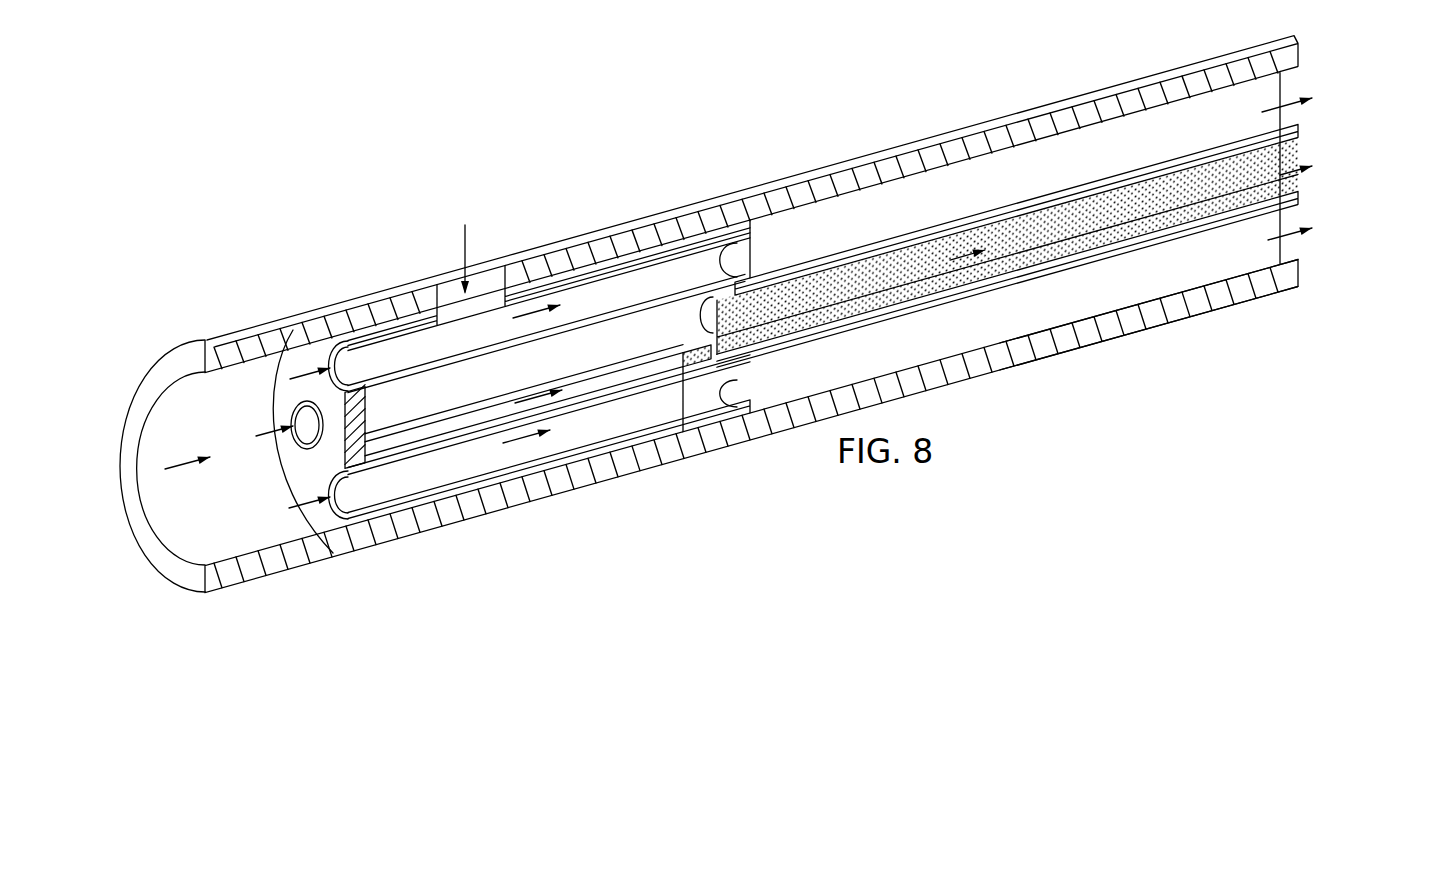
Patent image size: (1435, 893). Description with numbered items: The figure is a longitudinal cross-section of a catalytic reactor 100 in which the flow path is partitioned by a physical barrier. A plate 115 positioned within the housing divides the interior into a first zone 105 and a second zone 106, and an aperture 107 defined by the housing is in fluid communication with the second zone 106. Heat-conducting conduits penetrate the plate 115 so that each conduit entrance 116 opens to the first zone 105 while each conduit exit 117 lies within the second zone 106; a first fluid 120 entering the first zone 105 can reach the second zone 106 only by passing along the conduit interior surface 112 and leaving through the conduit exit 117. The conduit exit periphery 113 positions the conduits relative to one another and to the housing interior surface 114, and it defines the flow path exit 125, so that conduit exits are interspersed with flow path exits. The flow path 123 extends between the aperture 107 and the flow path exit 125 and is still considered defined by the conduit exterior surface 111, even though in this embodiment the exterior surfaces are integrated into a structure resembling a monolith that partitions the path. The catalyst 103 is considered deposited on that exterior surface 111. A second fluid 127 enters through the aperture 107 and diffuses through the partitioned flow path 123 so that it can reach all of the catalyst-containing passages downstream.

The catalytic reactor 100 is at (746, 166).
The catalyst 103 is at (848, 288).
The first zone 105 is at (188, 523).
The second zone 106 is at (628, 373).
The aperture 107 is at (500, 275).
The conduit exterior surface 111 is at (413, 407).
The conduit interior surface 112 is at (468, 463).
The conduit exit periphery 113 is at (1300, 190).
The housing interior surface 114 is at (280, 537).
The plate 115 is at (304, 372).
The conduit entrance 116 is at (286, 415).
The conduit exit 117 is at (1298, 262).
The first fluid 120 is at (296, 332).
The flow path 123 is at (660, 368).
The flow path exit 125 is at (1303, 138).
The second fluid 127 is at (463, 252).